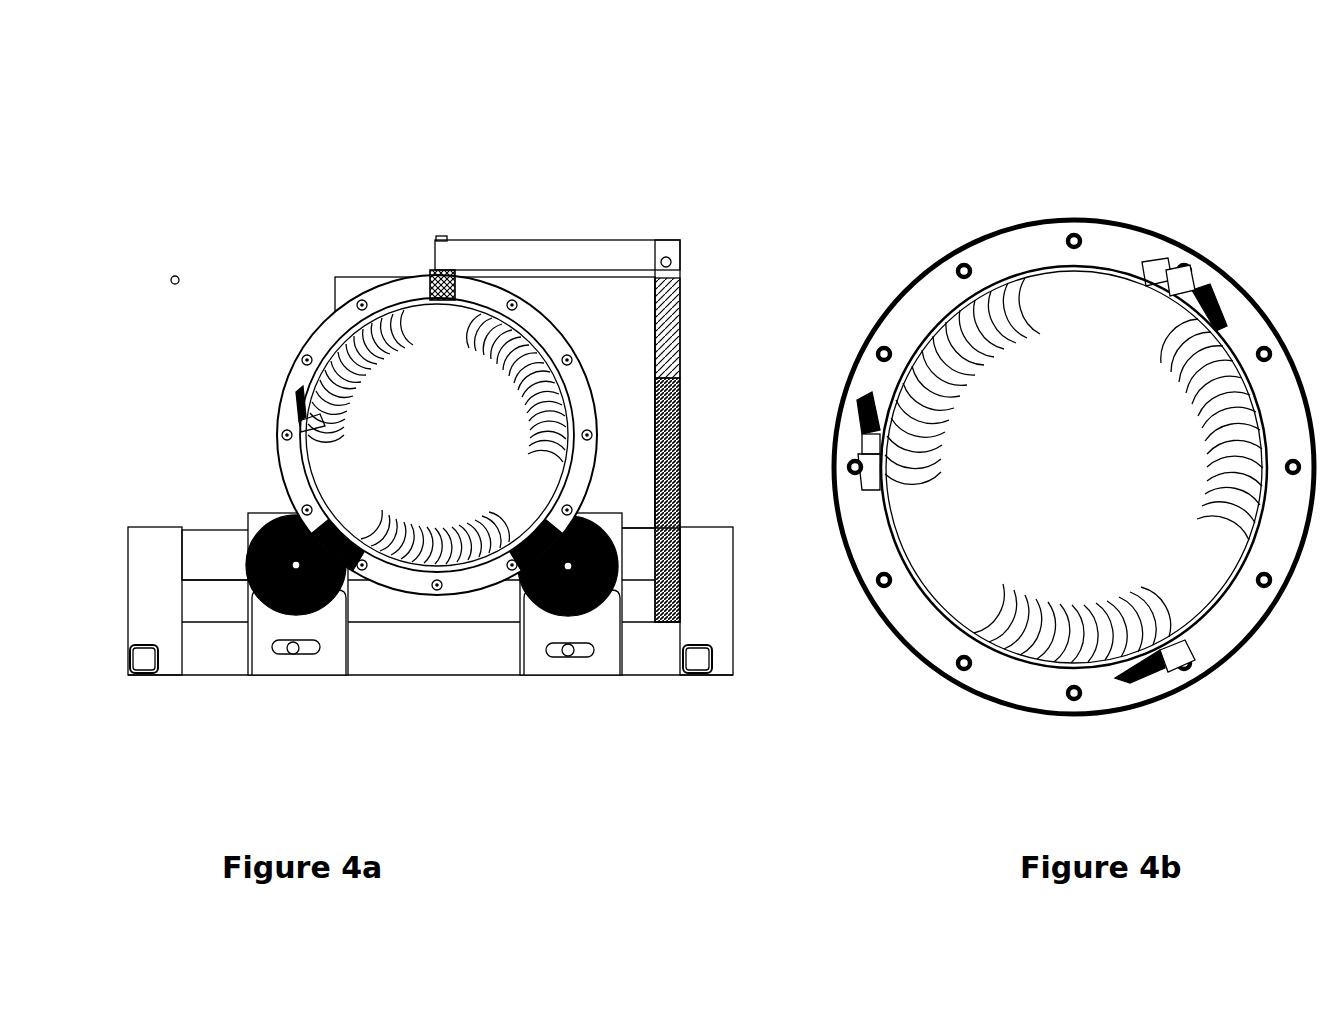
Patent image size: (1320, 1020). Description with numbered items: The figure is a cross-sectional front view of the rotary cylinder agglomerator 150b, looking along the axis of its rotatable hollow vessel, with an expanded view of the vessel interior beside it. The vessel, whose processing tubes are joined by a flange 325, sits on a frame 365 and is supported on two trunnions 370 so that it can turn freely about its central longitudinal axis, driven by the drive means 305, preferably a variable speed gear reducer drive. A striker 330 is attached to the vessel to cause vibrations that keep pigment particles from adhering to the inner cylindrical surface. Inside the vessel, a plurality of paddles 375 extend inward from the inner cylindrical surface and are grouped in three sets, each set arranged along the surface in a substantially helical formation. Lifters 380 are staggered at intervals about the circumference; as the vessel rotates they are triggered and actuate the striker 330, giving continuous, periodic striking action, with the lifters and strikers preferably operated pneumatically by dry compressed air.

In FIG. 4A, the rotary cylinder agglomerator 150b is at (466, 150).
In FIG. 4B, the rotary cylinder agglomerator 150b is at (1232, 124).
In FIG. 4A, the drive means 305 is at (352, 268).
In FIG. 4A, the flange 325 is at (300, 348).
In FIG. 4A, the striker 330 is at (623, 240).
In FIG. 4A, the frame 365 is at (135, 655).
In FIG. 4A, the trunnion 370 is at (262, 597).
In FIG. 4A, the paddle 375 is at (320, 407).
In FIG. 4B, the paddle 375 is at (1020, 333).
In FIG. 4A, the lifter 380 is at (292, 383).
In FIG. 4B, the lifter 380 is at (833, 490).